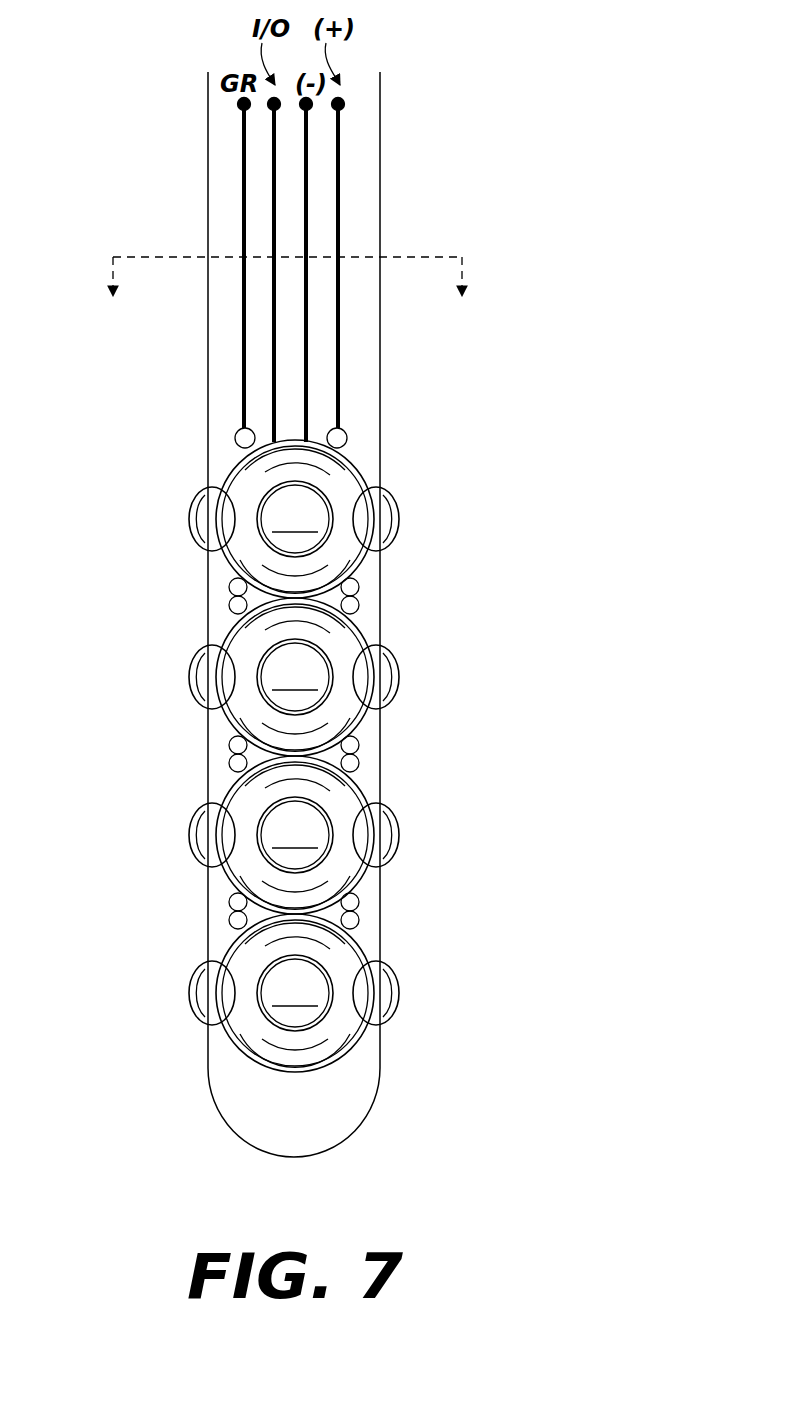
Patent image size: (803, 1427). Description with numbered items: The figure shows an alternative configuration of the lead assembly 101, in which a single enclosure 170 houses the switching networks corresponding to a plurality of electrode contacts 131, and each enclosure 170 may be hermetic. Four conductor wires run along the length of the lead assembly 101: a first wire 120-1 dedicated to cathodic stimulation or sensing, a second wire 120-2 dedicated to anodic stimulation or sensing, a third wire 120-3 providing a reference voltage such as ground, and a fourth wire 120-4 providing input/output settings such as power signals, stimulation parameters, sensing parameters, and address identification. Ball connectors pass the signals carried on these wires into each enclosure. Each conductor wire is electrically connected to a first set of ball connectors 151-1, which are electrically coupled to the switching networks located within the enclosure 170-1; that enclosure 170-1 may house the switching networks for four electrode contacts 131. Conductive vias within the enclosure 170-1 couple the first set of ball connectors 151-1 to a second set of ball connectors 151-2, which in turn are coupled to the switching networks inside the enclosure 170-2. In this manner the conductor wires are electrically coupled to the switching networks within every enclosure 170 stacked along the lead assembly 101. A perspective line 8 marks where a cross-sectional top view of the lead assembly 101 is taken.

The lead assembly 101 is at (522, 455).
The first wire 120-1 is at (338, 130).
The second wire 120-2 is at (306, 173).
The third wire 120-3 is at (244, 167).
The fourth wire 120-4 is at (274, 220).
The electrode contact 131 is at (195, 514).
The first set of ball connectors 151-1 is at (238, 432).
The second set of ball connectors 151-2 is at (228, 588).
The enclosure 170 is at (247, 790).
The first enclosure 170-1 is at (253, 477).
The second enclosure 170-2 is at (338, 722).
The perspective line 8 is at (285, 300).